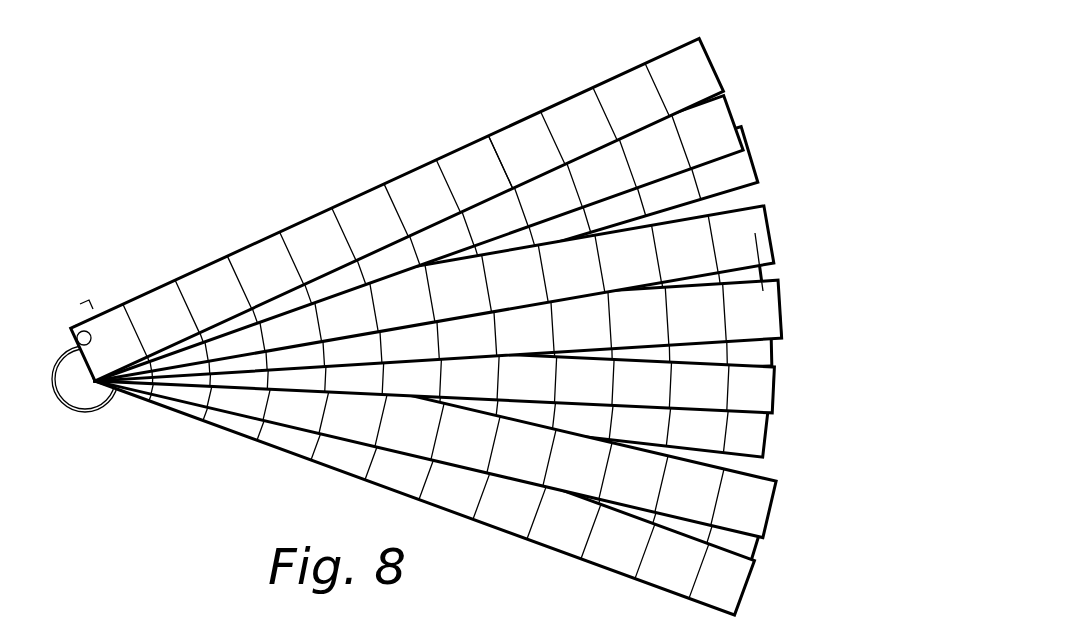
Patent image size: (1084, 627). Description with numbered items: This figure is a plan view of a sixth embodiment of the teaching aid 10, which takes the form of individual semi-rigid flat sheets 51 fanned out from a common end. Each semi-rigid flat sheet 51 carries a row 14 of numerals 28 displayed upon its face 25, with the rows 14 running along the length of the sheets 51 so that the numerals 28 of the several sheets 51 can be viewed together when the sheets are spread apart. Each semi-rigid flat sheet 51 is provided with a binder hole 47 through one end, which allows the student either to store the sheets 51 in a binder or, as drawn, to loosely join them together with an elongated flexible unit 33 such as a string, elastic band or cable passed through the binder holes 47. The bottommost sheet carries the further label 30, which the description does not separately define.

The teaching aid 10 is at (441, 319).
The rows 14 is at (441, 319).
The faces 25 is at (520, 136).
The numerals 28 is at (685, 63).
The bottom strip 30 is at (426, 477).
The elongated flexible unit 33 is at (85, 415).
The binder hole 47 is at (75, 323).
The semi-rigid flat sheets 51 is at (772, 388).